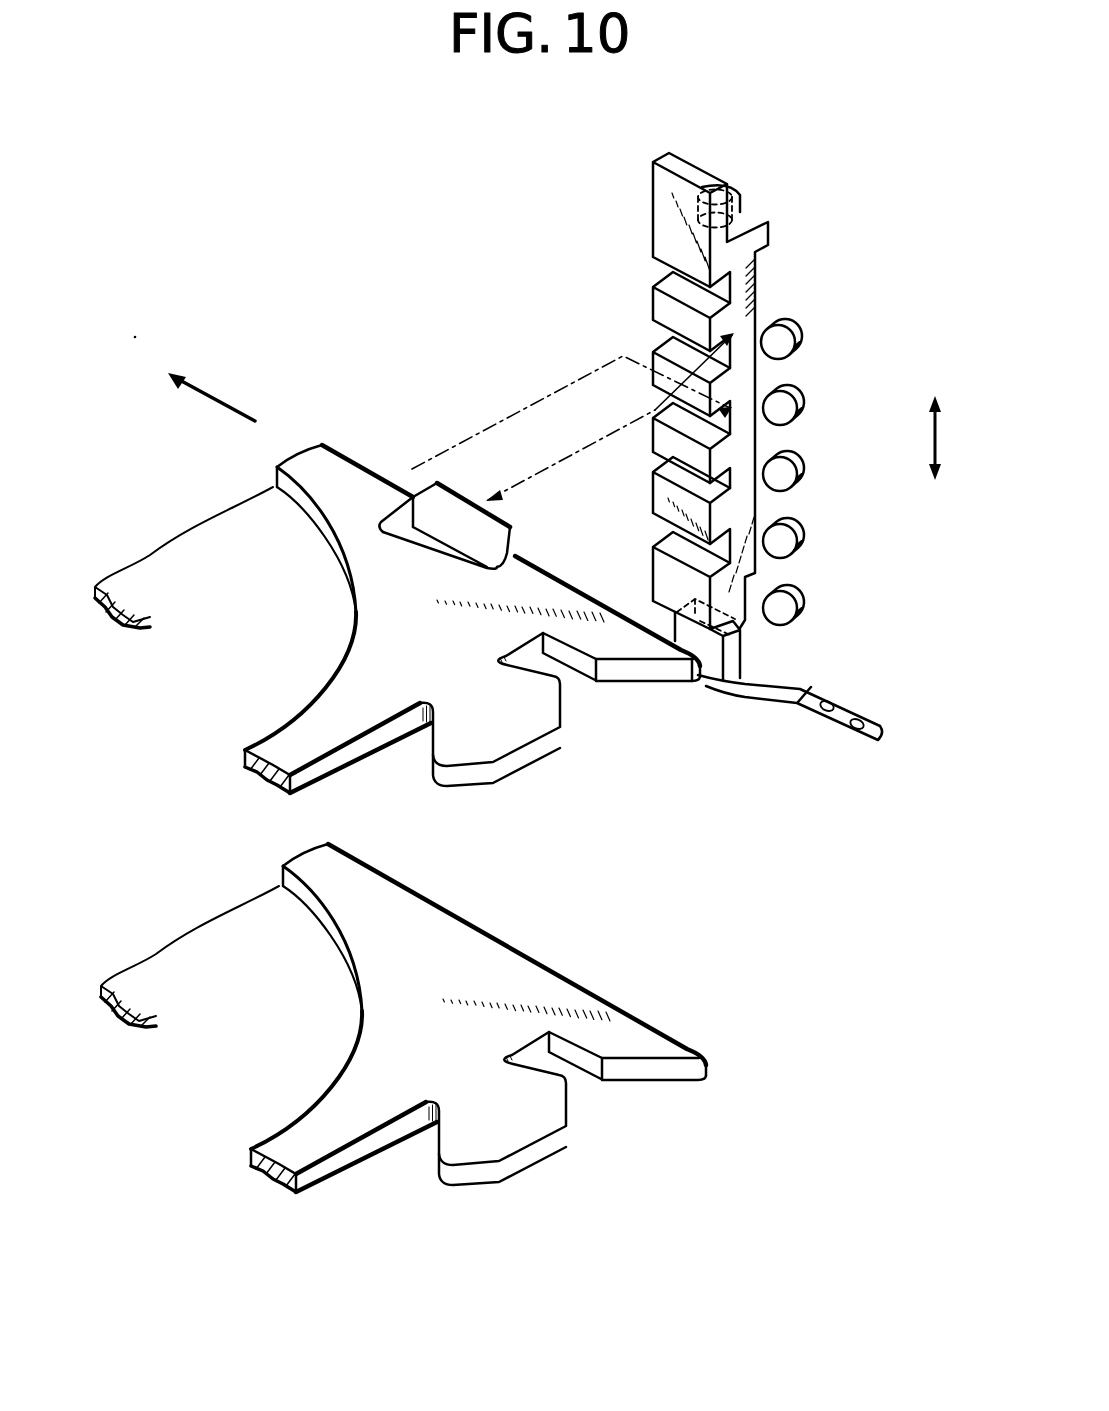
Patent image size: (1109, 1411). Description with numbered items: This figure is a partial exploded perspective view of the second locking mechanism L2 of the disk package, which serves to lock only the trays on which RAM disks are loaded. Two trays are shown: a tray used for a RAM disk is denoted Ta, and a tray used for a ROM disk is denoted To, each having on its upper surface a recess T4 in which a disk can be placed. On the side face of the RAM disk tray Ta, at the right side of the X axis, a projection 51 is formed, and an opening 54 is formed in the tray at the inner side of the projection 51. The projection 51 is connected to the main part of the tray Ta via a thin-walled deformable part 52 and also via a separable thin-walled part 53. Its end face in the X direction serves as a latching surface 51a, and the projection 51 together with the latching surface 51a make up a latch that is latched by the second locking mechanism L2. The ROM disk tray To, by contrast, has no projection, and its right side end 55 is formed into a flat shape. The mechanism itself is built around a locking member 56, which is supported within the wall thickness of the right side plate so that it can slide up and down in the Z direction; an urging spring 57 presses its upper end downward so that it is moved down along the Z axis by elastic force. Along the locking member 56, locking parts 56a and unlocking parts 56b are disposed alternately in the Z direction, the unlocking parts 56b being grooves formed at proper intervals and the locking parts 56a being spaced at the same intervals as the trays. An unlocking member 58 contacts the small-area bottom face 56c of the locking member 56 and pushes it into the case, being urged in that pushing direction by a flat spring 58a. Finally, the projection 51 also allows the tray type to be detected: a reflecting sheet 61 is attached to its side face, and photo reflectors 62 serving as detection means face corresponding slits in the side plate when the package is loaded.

The projection 51 is at (458, 513).
The latching surface 51a is at (420, 478).
The thin-walled deformable part 52 is at (512, 548).
The separable thin-walled part 53 is at (370, 478).
The opening 54 is at (421, 540).
The right side end 55 is at (489, 921).
The locking member 56 is at (738, 272).
The locking parts 56a is at (730, 318).
The unlocking parts 56b is at (688, 291).
The bottom face 56c is at (737, 628).
The urging spring 57 is at (738, 193).
The unlocking member 58 is at (713, 668).
The flat spring 58a is at (837, 717).
The reflecting sheet 61 is at (505, 517).
The photo reflectors 62 is at (797, 400).
The second locking mechanism L2 is at (595, 255).
The RAM disk tray Ta is at (363, 450).
The recess T4 is at (300, 513).
The ROM disk tray To is at (598, 977).
The X axis X is at (211, 394).
The Z axis Z is at (946, 438).